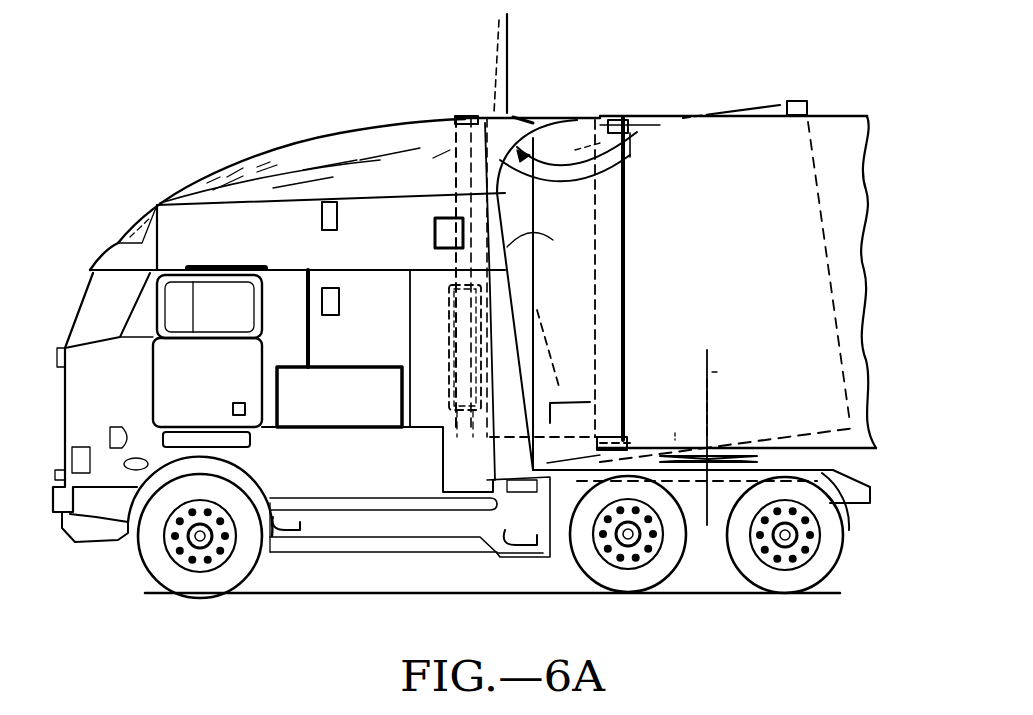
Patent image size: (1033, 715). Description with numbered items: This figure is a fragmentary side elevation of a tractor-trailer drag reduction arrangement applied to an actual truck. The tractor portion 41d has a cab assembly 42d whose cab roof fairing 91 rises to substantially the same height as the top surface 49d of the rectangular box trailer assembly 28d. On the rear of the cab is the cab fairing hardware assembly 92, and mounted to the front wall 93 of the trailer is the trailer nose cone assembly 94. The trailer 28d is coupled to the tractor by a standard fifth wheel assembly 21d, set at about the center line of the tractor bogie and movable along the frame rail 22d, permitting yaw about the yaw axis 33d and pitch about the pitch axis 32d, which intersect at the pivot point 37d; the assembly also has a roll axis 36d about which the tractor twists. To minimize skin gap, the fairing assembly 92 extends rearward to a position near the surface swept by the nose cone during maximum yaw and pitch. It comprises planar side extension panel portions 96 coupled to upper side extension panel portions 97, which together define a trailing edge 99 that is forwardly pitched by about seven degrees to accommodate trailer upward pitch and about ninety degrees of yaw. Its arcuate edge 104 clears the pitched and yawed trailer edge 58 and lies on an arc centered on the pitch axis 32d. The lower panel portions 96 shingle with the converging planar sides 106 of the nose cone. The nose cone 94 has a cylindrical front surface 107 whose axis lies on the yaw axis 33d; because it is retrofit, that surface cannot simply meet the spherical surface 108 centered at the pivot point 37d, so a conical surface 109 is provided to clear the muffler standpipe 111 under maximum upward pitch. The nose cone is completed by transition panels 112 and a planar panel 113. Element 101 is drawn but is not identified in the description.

The tractor portion 41d is at (84, 283).
The cab assembly 42d is at (255, 140).
The cab roof fairing 91 is at (327, 150).
The conical surface 109 is at (365, 160).
The fairing rear block 101 is at (468, 116).
The cab fairing hardware assembly 92 is at (484, 105).
The spherical surface 108 is at (507, 16).
The trailer nose cone assembly 94 is at (545, 94).
The transition panels 112 is at (577, 120).
The planar panel 113 is at (603, 118).
The arcuate edge 104 is at (630, 133).
The trailer edge 58 is at (545, 162).
The top surface of the trailer 49d is at (714, 114).
The trailer assembly 28d is at (790, 97).
The muffler standpipe 111 is at (457, 203).
The trailing edge 99 is at (533, 207).
The upper side extension panel portions 97 is at (546, 237).
The cylindrical front surface 107 is at (530, 300).
The front wall 93 is at (600, 318).
The side extension panel portions 96 is at (507, 370).
The converging planar sides 106 is at (565, 366).
The yaw axis 33d is at (731, 373).
The pitch axis 32d is at (677, 421).
The pivot point 37d is at (710, 437).
The fifth wheel assembly 21d is at (790, 460).
The frame rail 22d is at (700, 493).
The roll axis 36d is at (880, 513).